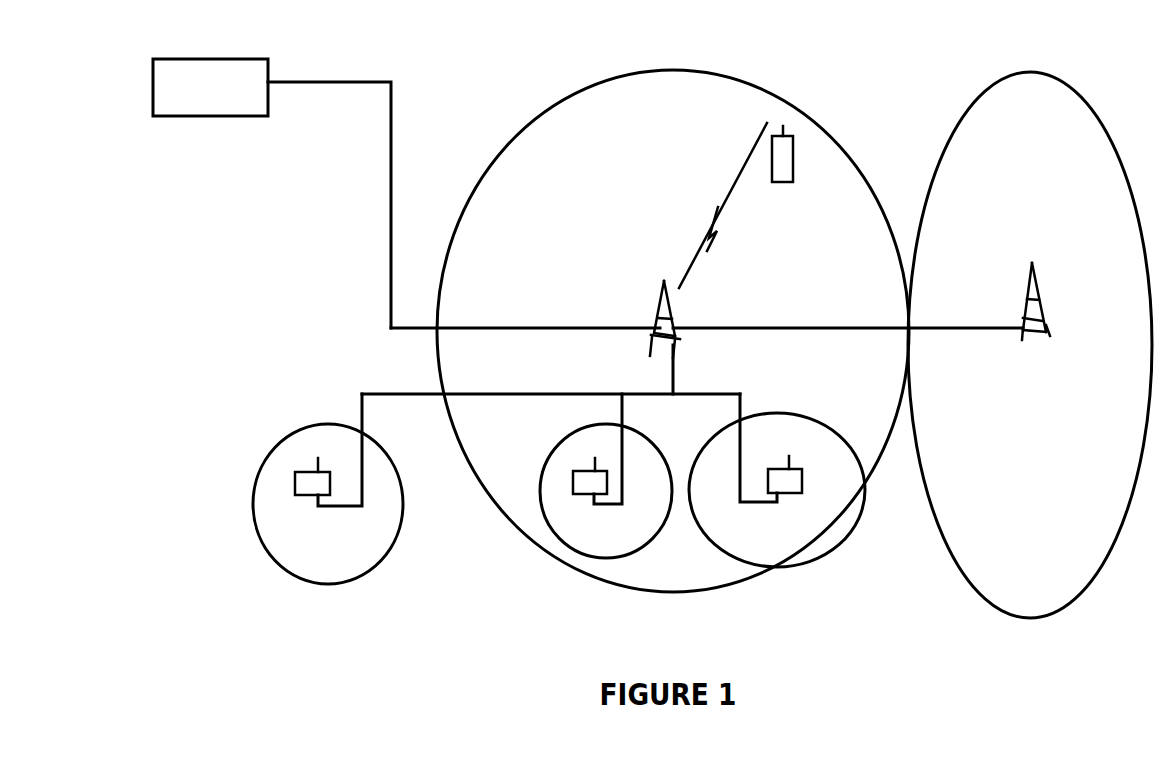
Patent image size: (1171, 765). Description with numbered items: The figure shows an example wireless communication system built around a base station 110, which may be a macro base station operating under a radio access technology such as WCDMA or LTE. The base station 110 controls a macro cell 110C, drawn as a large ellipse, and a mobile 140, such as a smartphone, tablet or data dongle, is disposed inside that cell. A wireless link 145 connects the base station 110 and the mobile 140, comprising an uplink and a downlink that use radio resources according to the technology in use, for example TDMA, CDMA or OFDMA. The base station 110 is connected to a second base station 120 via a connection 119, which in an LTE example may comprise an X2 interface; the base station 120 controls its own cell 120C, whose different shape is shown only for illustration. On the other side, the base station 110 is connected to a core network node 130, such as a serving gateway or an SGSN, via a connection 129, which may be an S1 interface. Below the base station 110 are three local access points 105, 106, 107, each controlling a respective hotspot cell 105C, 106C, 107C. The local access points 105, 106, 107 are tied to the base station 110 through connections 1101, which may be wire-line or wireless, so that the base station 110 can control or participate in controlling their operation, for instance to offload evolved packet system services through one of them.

The core network node 130 is at (272, 193).
The cell 110C is at (673, 317).
The cell 120C is at (1030, 333).
The base station 110 is at (664, 302).
The base station 120 is at (1033, 289).
The connection 129 is at (525, 314).
The connection 119 is at (848, 314).
The connections 1101 is at (551, 369).
The mobile 140 is at (783, 169).
The wireless link 145 is at (723, 205).
The local access point 105 is at (305, 481).
The local access point 106 is at (584, 481).
The local access point 107 is at (791, 485).
The cell 105C is at (328, 519).
The cell 106C is at (606, 559).
The cell 107C is at (811, 563).